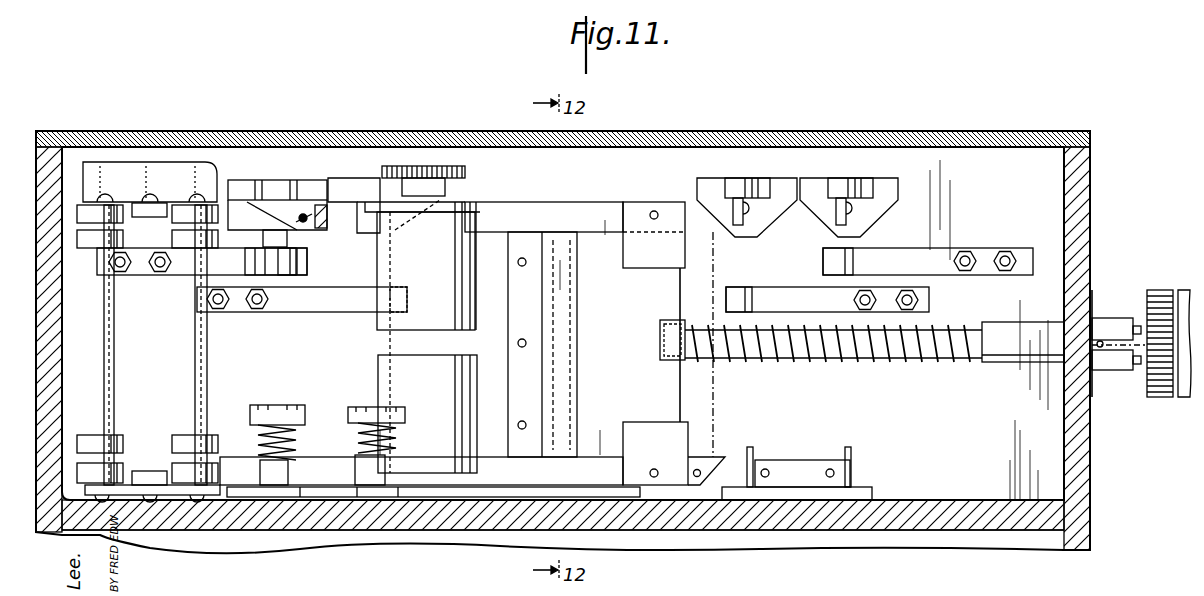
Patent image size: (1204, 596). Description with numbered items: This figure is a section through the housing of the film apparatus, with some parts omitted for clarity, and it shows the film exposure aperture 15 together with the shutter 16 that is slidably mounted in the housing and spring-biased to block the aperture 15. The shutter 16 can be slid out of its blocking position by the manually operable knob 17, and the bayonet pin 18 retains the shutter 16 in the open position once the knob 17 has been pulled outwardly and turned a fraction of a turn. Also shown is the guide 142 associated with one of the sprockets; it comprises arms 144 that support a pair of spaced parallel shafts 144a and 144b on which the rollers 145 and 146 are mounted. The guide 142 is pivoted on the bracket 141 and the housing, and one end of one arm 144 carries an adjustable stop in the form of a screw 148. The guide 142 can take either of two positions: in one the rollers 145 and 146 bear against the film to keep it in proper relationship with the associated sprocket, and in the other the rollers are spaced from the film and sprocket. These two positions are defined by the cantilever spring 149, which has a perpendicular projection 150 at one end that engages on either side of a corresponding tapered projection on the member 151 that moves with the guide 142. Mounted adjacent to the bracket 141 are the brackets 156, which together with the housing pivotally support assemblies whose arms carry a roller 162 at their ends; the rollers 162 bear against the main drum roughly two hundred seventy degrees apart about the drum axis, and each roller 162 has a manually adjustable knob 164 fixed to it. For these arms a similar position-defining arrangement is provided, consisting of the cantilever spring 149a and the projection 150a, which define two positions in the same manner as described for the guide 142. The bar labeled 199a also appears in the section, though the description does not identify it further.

The film exposure aperture 15 is at (570, 333).
The shutter 16 is at (680, 380).
The manually operable knob 17 is at (1160, 398).
The bayonet pin 18 is at (1104, 320).
The bracket 141 is at (286, 182).
The guide 142 is at (210, 159).
The arm 144 is at (255, 446).
The shaft 144a is at (118, 375).
The shaft 144b is at (207, 362).
The roller 145 is at (85, 236).
The roller 146 is at (174, 241).
The screw 148 is at (338, 237).
The cantilever spring 149 is at (175, 276).
The cantilever spring 149a is at (795, 312).
The perpendicular projection 150 is at (858, 258).
The projection 150a is at (755, 292).
The member 151 is at (470, 210).
The bracket 156 is at (337, 180).
The roller 162 is at (470, 272).
The manually adjustable knob 164 is at (394, 170).
The bar 199a is at (302, 313).